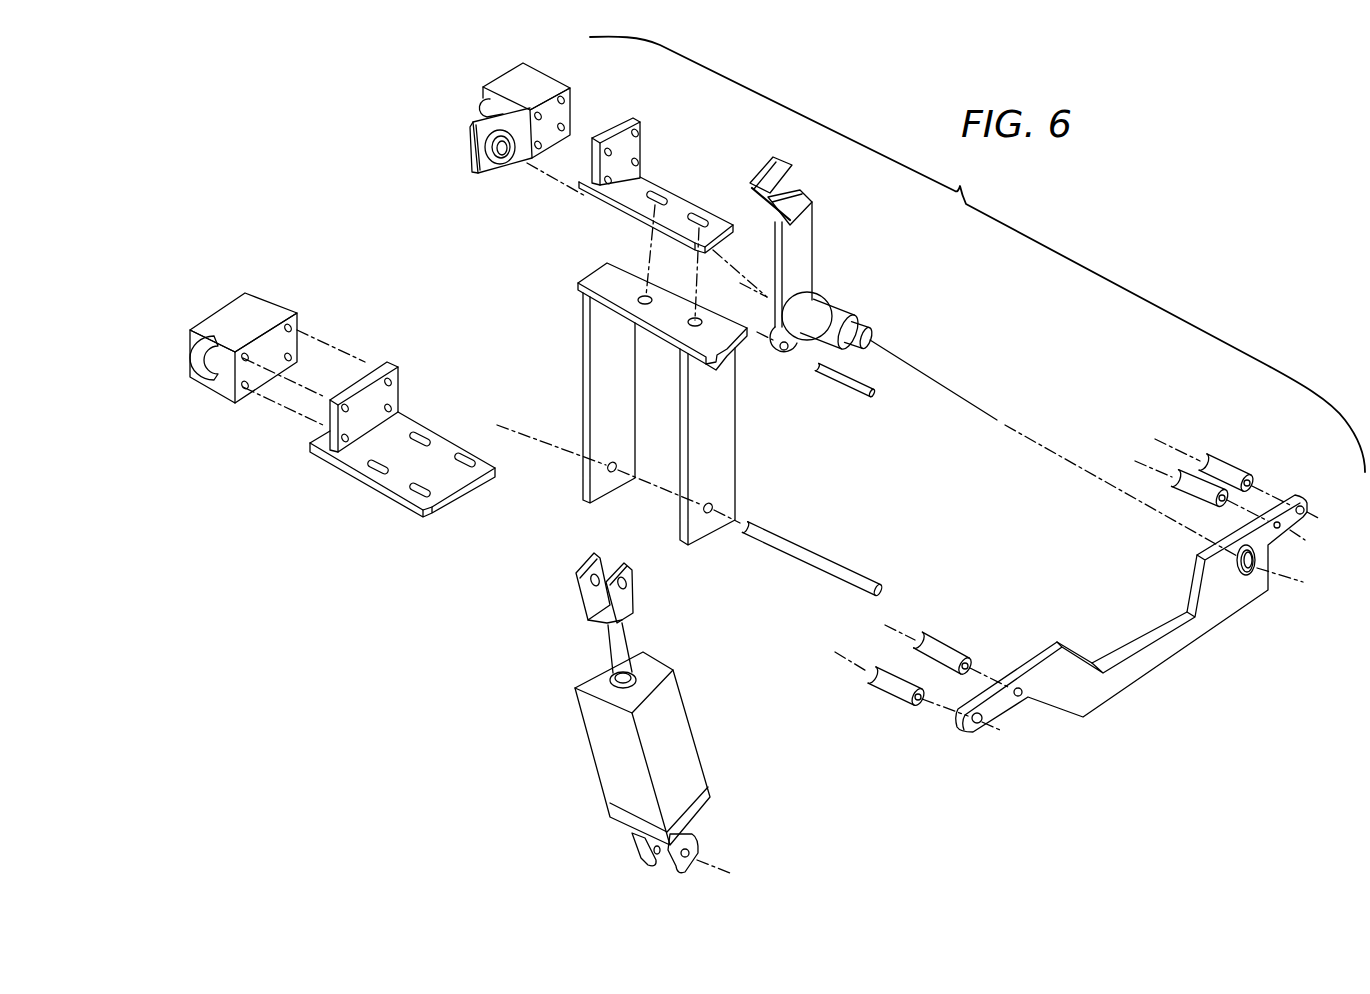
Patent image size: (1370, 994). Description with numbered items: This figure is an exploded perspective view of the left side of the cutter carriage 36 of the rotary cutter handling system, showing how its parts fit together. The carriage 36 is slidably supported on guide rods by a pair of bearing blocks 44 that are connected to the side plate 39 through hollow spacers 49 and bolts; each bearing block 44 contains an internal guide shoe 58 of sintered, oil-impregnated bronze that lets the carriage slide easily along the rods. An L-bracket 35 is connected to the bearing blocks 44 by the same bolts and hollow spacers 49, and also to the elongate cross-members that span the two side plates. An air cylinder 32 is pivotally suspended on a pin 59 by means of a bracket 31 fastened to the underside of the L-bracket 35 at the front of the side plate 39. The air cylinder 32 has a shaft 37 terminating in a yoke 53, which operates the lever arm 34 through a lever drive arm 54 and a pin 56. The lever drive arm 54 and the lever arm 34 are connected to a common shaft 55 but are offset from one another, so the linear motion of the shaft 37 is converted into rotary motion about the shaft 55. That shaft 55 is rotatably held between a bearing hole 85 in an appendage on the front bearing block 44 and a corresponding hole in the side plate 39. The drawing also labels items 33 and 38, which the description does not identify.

The bracket 31 is at (707, 430).
The air cylinder 32 is at (677, 715).
The lever arm 33 is at (1092, 662).
The lever arm 34 is at (797, 247).
The L-bracket 35 is at (667, 190).
The cutter carriage 36 is at (1250, 563).
The shaft 37 is at (613, 655).
The mounting plate 38 is at (472, 127).
The side plate 39 is at (1233, 598).
The bearing block 44 is at (542, 88).
The hollow spacer 49 is at (1200, 487).
The yoke 53 is at (630, 603).
The lever drive arm 54 is at (778, 357).
The shaft 55 is at (835, 318).
The pin 56 is at (851, 390).
The guide shoe 58 is at (492, 113).
The pin 59 is at (825, 558).
The bearing hole 85 is at (502, 148).